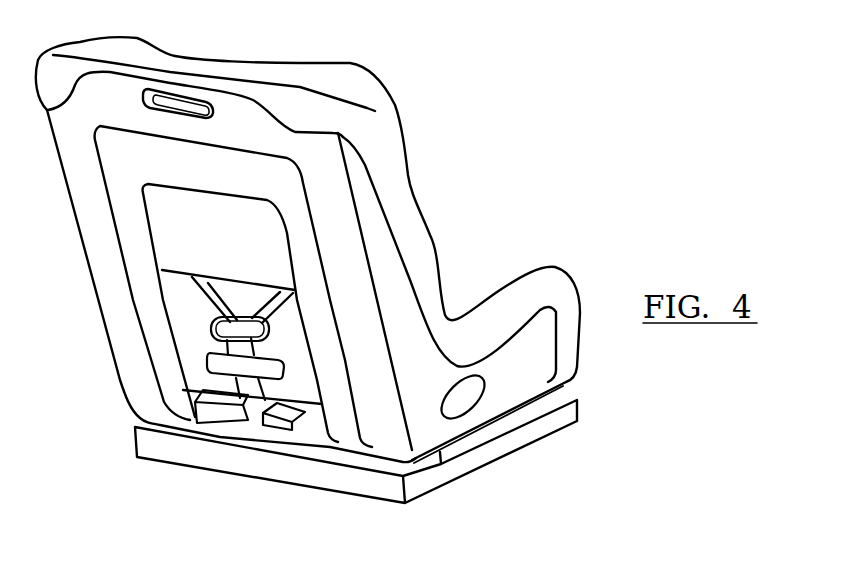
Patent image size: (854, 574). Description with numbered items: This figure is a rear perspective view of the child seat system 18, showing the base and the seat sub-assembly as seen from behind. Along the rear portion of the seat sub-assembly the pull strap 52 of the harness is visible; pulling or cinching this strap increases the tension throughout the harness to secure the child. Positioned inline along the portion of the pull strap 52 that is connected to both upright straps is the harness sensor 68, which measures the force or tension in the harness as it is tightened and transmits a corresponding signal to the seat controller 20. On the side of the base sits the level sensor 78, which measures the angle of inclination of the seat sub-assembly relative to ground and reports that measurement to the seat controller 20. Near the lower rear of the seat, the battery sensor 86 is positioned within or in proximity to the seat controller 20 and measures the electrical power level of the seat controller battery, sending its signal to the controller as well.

The seat system 18 is at (453, 97).
The seat controller 20 is at (224, 412).
The pull strap 52 is at (233, 381).
The harness sensor 68 is at (230, 364).
The level sensor 78 is at (468, 392).
The battery sensor 86 is at (283, 432).